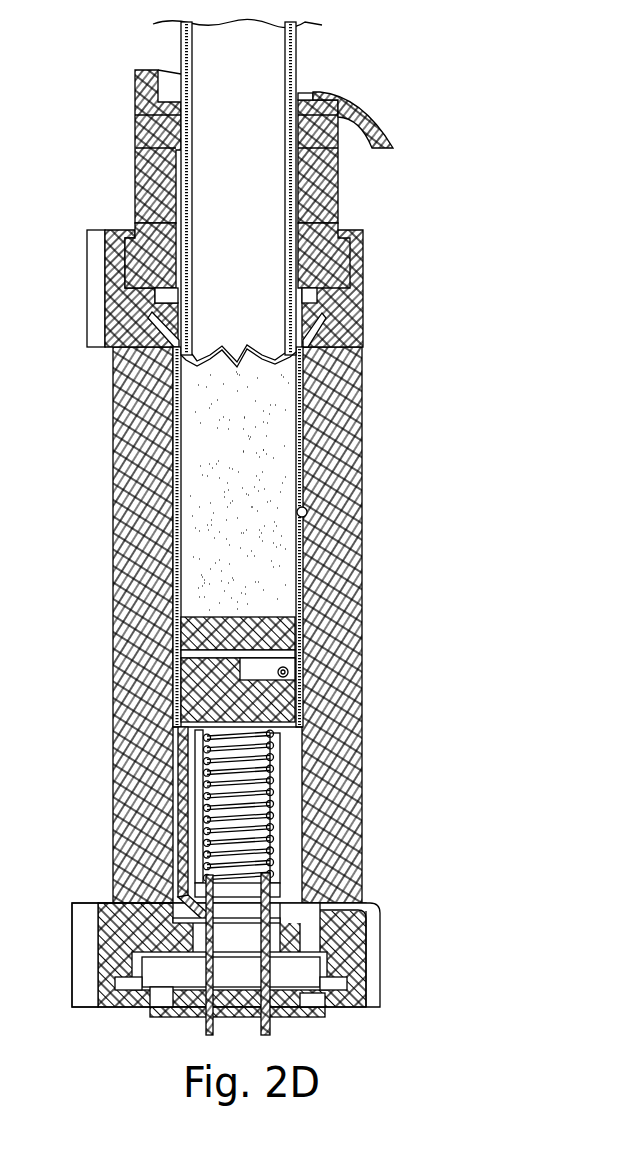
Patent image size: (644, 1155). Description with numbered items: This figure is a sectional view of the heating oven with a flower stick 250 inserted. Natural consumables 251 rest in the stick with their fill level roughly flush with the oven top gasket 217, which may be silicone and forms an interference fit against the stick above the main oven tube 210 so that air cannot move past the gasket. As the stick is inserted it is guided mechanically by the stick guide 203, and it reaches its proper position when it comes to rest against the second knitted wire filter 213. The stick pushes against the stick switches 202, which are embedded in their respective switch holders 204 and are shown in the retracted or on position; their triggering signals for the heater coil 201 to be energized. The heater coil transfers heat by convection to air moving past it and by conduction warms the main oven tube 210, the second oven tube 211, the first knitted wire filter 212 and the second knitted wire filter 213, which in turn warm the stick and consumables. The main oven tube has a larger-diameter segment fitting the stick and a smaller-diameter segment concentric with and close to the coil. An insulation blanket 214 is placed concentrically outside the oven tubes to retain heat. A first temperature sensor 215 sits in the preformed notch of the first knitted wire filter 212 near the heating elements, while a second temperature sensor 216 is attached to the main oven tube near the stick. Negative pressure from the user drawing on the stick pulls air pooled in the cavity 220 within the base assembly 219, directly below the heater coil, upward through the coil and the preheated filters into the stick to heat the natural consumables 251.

The flower stick 250 is at (181, 55).
The stick guide 203 is at (366, 112).
The stick switches 202 is at (142, 176).
The switch holders 204 is at (343, 263).
The oven top gasket 217 is at (350, 339).
The main oven tube 210 is at (303, 413).
The natural consumables 251 is at (257, 450).
The second temperature sensor 216 is at (307, 512).
The insulation blanket 214 is at (350, 600).
The second knitted wire filter 213 is at (187, 642).
The first temperature sensor 215 is at (290, 672).
The first knitted wire filter 212 is at (275, 692).
The second oven tube 211 is at (333, 768).
The heater coil 201 is at (280, 853).
The base assembly 219 is at (330, 937).
The cavity 220 is at (245, 972).